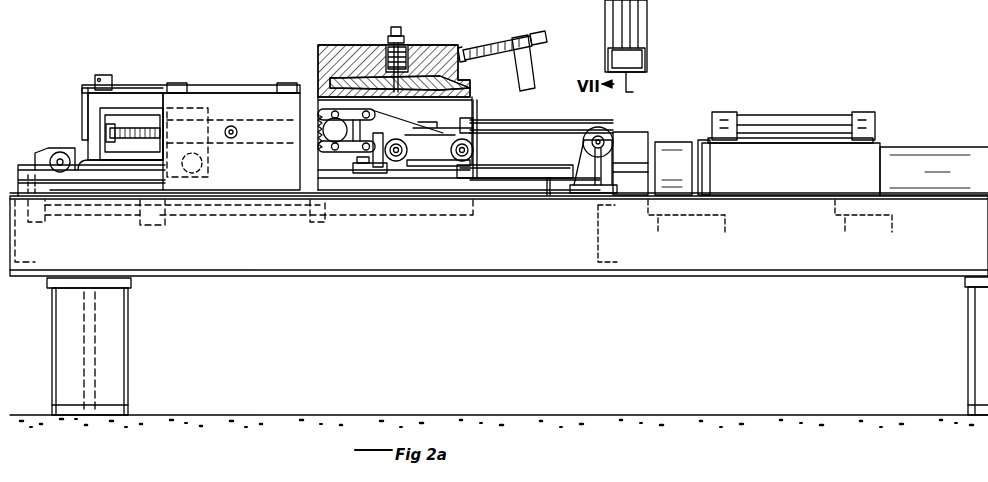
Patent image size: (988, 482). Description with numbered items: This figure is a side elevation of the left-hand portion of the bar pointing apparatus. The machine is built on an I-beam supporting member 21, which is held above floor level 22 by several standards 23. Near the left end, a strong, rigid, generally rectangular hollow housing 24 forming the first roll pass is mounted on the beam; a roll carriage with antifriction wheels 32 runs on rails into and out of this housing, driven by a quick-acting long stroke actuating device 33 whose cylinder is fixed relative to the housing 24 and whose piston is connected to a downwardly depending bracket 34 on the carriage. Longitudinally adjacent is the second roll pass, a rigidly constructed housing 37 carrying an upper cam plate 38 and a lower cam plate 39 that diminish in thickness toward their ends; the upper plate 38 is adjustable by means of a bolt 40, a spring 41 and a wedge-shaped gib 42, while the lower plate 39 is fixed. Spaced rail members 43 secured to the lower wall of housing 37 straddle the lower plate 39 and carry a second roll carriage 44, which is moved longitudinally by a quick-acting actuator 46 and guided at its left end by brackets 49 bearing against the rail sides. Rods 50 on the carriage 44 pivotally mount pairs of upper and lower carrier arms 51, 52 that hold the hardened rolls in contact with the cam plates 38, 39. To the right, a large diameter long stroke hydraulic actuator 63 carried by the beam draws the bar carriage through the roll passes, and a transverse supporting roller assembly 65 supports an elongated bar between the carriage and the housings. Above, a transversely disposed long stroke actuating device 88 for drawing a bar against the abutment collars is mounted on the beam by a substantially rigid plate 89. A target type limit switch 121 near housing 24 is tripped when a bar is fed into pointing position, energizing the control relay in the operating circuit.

The I-beam supporting member 21 is at (775, 260).
The floor level 22 is at (497, 415).
The standard 23 is at (115, 360).
The housing 24 is at (252, 102).
The antifriction wheel 32 is at (60, 155).
The actuating device 33 is at (215, 208).
The bracket 34 is at (48, 222).
The housing 37 is at (457, 44).
The upper cam plate 38 is at (470, 95).
The lower cam plate 39 is at (342, 170).
The bolt 40 is at (387, 30).
The spring 41 is at (405, 44).
The wedge-shaped gib 42 is at (534, 78).
The rail member 43 is at (516, 172).
The second roll carriage 44 is at (436, 160).
The actuator 46 is at (805, 122).
The bracket 49 is at (385, 172).
The rod 50 is at (381, 145).
The upper carrier arm 51 is at (373, 108).
The lower carrier arm 52 is at (318, 148).
The hydraulic actuator 63 is at (915, 153).
The supporting roller assembly 65 is at (584, 145).
The actuating device 88 is at (638, 142).
The plate 89 is at (645, 24).
The limit switch 121 is at (80, 110).